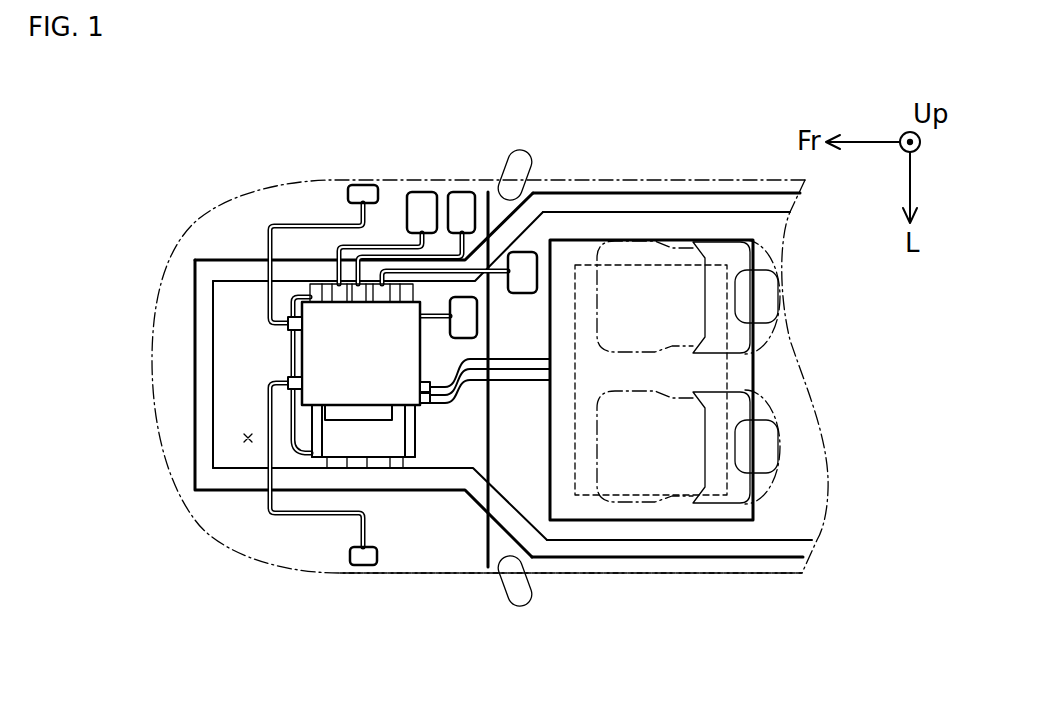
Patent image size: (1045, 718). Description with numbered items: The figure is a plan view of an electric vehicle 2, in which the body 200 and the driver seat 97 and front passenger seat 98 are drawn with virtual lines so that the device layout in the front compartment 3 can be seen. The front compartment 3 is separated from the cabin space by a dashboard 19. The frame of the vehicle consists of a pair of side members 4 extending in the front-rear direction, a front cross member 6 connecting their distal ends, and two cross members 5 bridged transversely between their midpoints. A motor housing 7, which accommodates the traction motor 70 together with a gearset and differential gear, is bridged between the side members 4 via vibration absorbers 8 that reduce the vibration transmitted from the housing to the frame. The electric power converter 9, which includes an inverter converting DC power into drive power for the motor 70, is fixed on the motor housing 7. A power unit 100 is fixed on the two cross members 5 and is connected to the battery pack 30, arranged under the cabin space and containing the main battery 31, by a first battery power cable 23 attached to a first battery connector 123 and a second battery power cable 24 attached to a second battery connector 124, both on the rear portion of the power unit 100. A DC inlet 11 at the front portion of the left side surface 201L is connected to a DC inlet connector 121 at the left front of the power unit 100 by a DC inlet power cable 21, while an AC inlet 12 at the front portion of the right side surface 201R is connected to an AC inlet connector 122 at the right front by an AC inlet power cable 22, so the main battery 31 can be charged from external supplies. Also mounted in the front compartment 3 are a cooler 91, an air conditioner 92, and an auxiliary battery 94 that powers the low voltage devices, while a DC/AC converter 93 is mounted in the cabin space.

The electric vehicle 2 is at (117, 145).
The front compartment 3 is at (288, 410).
The side members 4 is at (224, 262).
The cross members 5 is at (310, 455).
The front cross member 6 is at (202, 273).
The motor housing 7 is at (297, 444).
The vibration absorbers 8 is at (345, 445).
The electric power converter 9 is at (248, 438).
The DC inlet 11 is at (363, 567).
The AC inlet 12 is at (363, 184).
The dashboard 19 is at (487, 560).
The DC inlet power cable 21 is at (265, 399).
The AC inlet power cable 22 is at (302, 255).
The first battery power cable 23 is at (500, 384).
The second battery power cable 24 is at (518, 382).
The battery pack 30 is at (625, 240).
The main battery 31 is at (597, 497).
The traction motor 70 is at (368, 420).
The cooler 91 is at (419, 191).
The air conditioner 92 is at (461, 191).
The DC/AC converter 93 is at (522, 251).
The auxiliary battery 94 is at (478, 325).
The driver seat 97 is at (768, 294).
The front passenger seat 98 is at (768, 452).
The power unit 100 is at (326, 352).
The DC inlet connector 121 is at (286, 381).
The AC inlet connector 122 is at (286, 324).
The first battery connector 123 is at (428, 408).
The second battery connector 124 is at (432, 386).
The body 200 is at (750, 178).
The right side surface 201R is at (688, 178).
The left side surface 201L is at (688, 576).